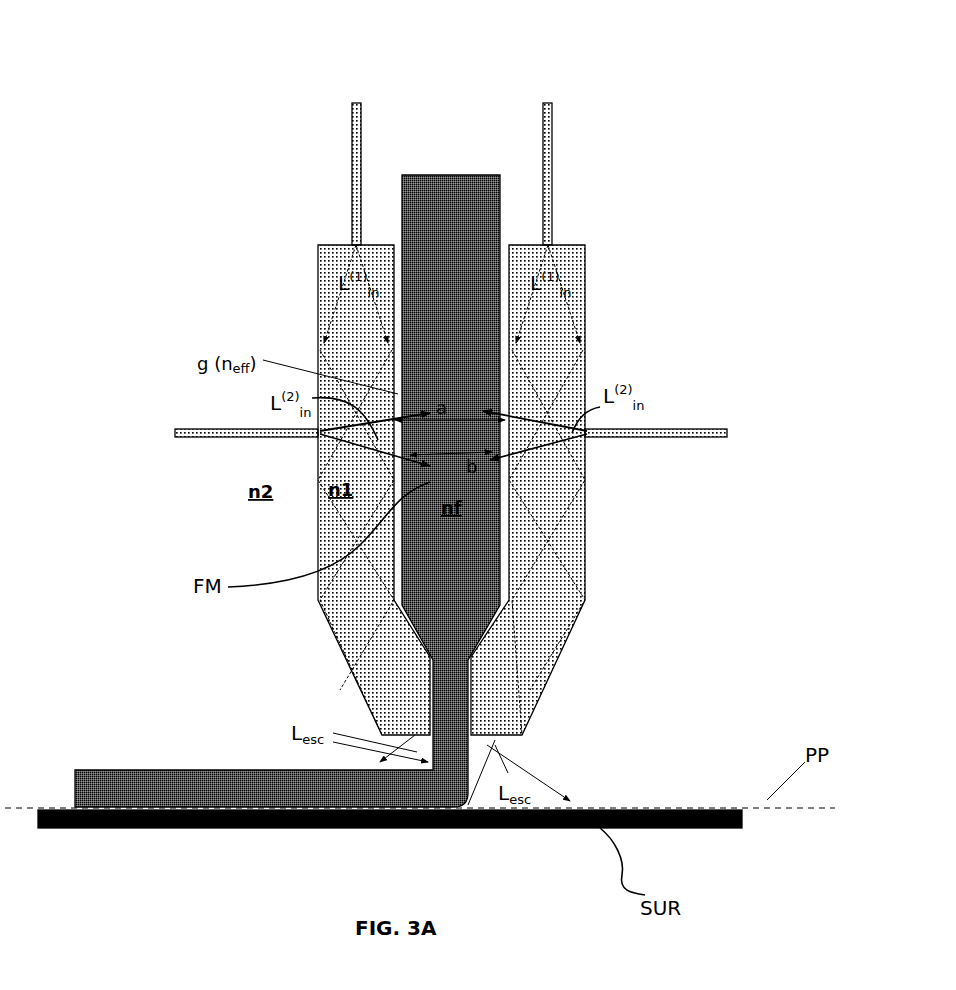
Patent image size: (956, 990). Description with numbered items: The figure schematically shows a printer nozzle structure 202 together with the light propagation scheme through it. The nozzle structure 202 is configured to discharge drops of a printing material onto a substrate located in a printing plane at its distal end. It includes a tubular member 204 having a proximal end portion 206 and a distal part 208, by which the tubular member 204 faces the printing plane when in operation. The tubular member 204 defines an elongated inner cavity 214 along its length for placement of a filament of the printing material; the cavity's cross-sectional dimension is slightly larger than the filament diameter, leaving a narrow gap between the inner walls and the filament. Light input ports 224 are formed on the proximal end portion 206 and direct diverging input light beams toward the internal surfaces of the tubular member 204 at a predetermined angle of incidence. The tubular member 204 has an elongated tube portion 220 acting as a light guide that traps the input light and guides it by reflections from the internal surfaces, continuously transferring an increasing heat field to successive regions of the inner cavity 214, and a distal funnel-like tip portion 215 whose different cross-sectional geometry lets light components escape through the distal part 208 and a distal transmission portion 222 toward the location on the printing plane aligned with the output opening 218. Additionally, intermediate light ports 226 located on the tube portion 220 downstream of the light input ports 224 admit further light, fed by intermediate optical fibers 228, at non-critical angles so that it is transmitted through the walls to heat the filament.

The printer nozzle structure 202 is at (254, 147).
The tubular member 204 is at (600, 271).
The proximal end portion 206 is at (542, 244).
The distal part 208 is at (527, 733).
The elongated inner cavity 214 is at (412, 375).
The distal funnel-like tip portion 215 is at (575, 642).
The output opening 218 is at (426, 727).
The elongated tube portion 220 is at (568, 490).
The distal transmission portion 222 is at (492, 735).
The light input ports 224 is at (355, 243).
The intermediate light ports 226 is at (587, 437).
The intermediate optical fibers 228 is at (657, 429).